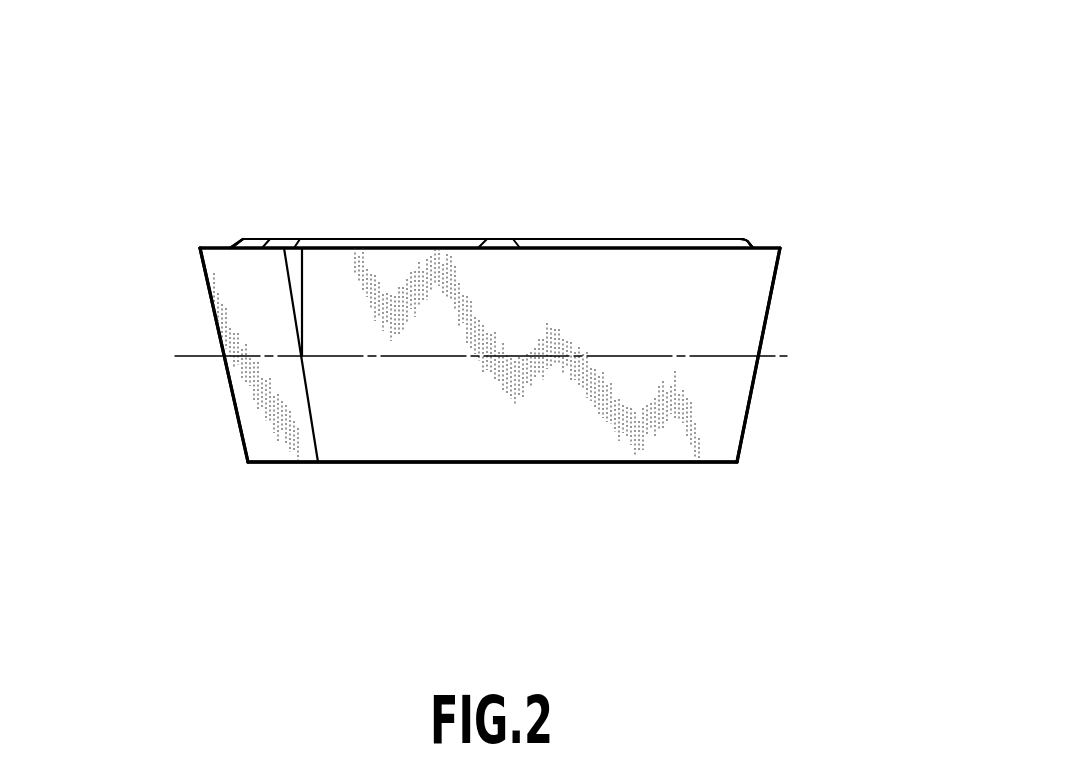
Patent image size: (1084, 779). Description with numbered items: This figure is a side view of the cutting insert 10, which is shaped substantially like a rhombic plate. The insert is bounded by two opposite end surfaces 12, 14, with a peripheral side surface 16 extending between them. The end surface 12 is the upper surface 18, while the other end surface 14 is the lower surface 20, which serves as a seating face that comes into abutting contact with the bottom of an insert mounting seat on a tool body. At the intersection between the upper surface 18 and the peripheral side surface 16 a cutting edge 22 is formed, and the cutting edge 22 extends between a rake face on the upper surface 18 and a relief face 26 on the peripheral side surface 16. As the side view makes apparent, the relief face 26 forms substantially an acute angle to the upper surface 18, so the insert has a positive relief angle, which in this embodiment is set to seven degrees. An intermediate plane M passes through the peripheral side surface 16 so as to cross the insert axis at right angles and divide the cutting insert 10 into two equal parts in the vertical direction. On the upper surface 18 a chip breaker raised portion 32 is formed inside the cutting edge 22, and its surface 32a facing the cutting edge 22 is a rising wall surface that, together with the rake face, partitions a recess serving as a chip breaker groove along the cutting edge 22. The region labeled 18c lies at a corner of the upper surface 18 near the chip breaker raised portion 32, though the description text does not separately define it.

The cutting insert 10 is at (702, 92).
The end surface 12 is at (491, 183).
The upper surface 18 is at (613, 216).
The corner portion of rake face 18c is at (146, 180).
The chip breaker raised portion 32 is at (252, 240).
The rising wall surface 32a is at (233, 245).
The cutting edge 22 is at (202, 248).
The relief face 26 is at (215, 315).
The peripheral side surface 16 is at (422, 448).
The end surface 14 is at (492, 532).
The lower surface 20 is at (587, 505).
The intermediate plane M is at (197, 358).